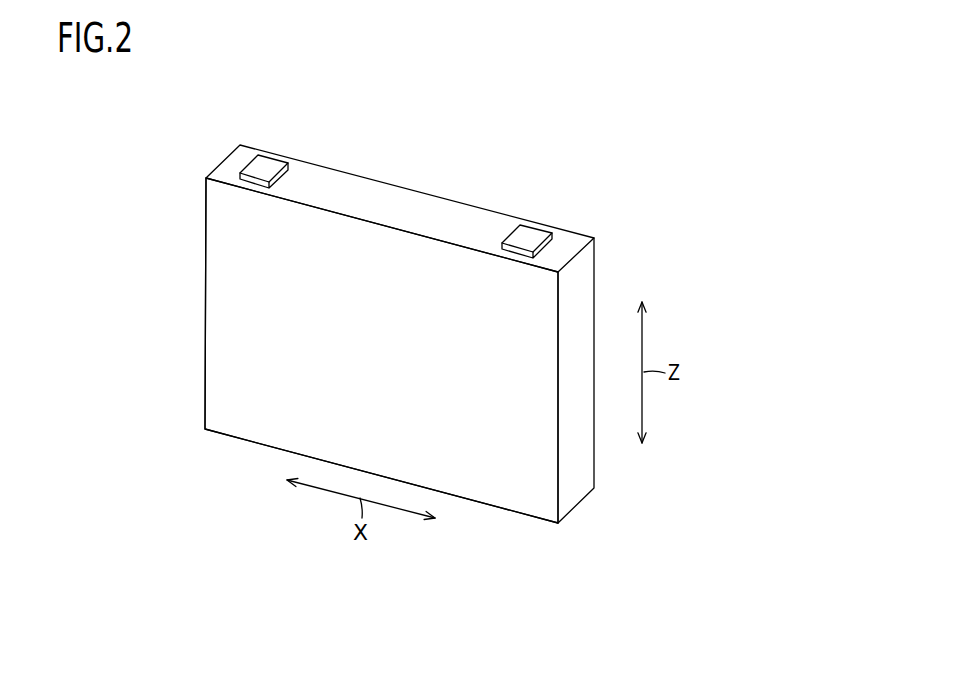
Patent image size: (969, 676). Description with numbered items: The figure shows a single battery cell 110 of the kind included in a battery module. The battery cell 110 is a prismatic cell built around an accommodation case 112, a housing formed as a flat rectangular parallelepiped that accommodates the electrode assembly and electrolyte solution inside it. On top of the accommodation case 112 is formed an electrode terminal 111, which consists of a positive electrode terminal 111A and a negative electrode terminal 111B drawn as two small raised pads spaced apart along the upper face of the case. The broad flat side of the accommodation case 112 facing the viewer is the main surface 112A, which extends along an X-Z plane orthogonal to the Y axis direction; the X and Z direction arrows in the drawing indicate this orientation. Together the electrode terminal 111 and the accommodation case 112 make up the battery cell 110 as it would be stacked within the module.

The battery cell 110 is at (215, 127).
The electrode terminal 111 is at (547, 112).
The positive electrode terminal 111A is at (265, 170).
The negative electrode terminal 111B is at (528, 238).
The accommodation case 112 is at (577, 478).
The main surface 112A is at (248, 333).